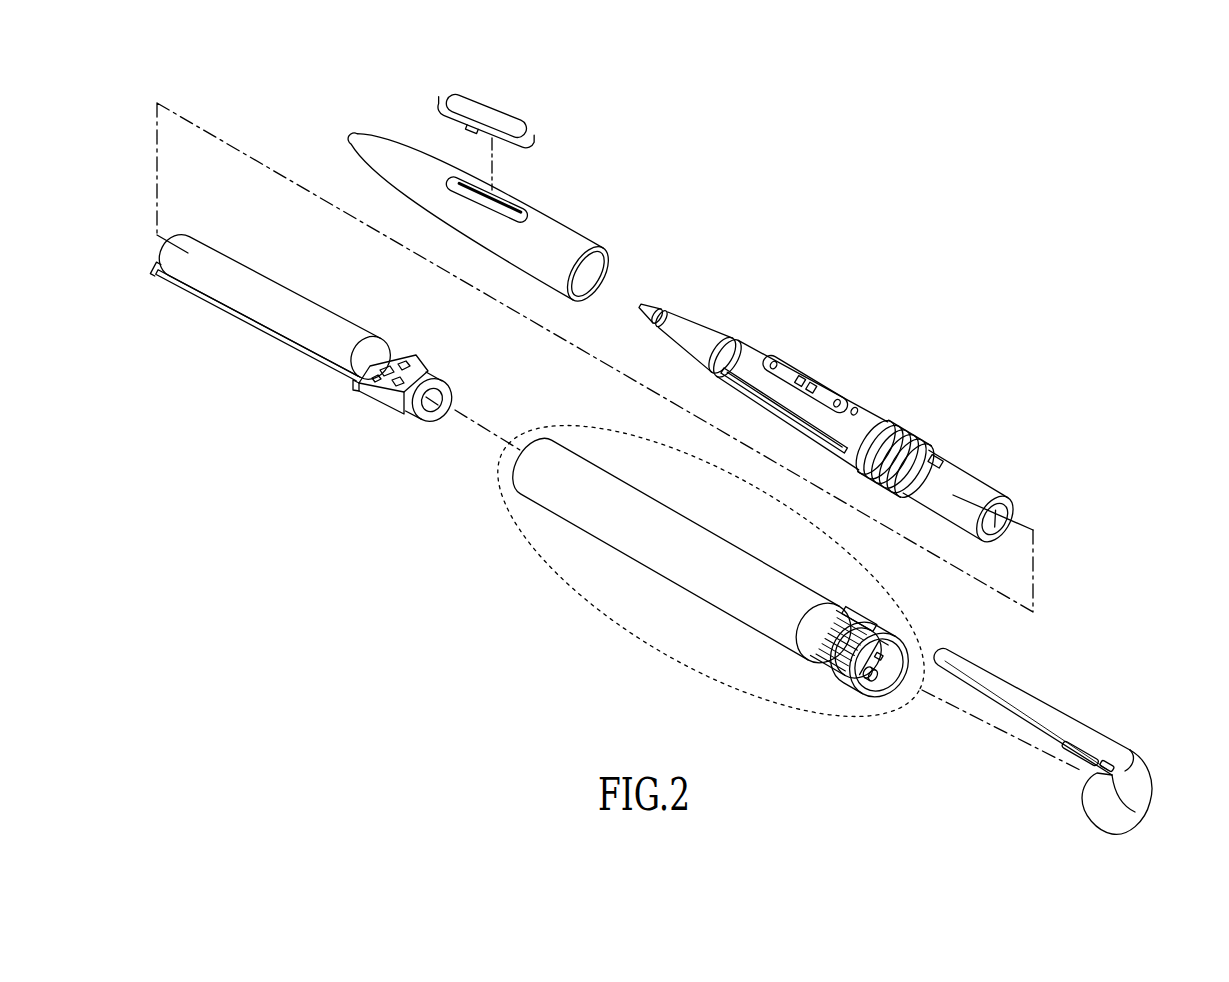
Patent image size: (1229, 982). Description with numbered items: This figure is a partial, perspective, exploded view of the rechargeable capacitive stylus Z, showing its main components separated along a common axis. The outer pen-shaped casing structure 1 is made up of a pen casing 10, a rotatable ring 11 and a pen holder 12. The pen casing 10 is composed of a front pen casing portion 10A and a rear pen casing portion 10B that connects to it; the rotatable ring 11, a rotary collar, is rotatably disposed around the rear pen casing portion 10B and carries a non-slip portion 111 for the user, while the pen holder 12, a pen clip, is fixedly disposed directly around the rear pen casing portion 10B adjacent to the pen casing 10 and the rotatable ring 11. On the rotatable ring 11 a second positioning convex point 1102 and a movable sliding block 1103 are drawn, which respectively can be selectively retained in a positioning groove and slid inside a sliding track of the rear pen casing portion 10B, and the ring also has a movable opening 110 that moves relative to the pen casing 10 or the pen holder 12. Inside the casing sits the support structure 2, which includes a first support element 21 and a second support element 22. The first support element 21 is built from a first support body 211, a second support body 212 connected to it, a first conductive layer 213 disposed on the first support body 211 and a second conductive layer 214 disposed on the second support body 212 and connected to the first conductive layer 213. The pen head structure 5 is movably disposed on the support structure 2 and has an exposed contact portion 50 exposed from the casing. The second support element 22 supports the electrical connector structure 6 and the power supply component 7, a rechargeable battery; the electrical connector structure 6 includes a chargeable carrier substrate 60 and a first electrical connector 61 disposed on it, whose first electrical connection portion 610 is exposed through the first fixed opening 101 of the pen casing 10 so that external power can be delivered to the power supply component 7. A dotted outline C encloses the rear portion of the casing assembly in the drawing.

The pen-shaped casing structure 1 is at (742, 607).
The support structure 2 is at (617, 379).
The pen head structure 5 is at (652, 313).
The electrical connector structure 6 is at (384, 406).
The power supply component 7 is at (297, 299).
The pen casing 10 is at (744, 464).
The front pen casing portion 10A is at (403, 170).
The rear pen casing portion 10B is at (704, 597).
The rotatable ring 11 is at (896, 685).
The pen holder 12 is at (1135, 795).
The first support element 21 is at (840, 379).
The second support element 22 is at (230, 316).
The exposed contact portion 50 is at (648, 311).
The chargeable carrier substrate 60 is at (362, 387).
The first electrical connector 61 is at (392, 362).
The first electrical connection portion 610 is at (419, 357).
The first fixed opening 101 is at (878, 664).
The movable opening 110 is at (859, 619).
The non-slip portion 111 is at (851, 648).
The first support body 211 is at (961, 499).
The second support body 212 is at (994, 519).
The first conductive layer 213 is at (810, 387).
The second conductive layer 214 is at (784, 410).
The second positioning convex point 1102 is at (870, 673).
The movable sliding block 1103 is at (858, 657).
The detail region C is at (552, 581).
The rechargeable capacitive stylus Z is at (787, 179).